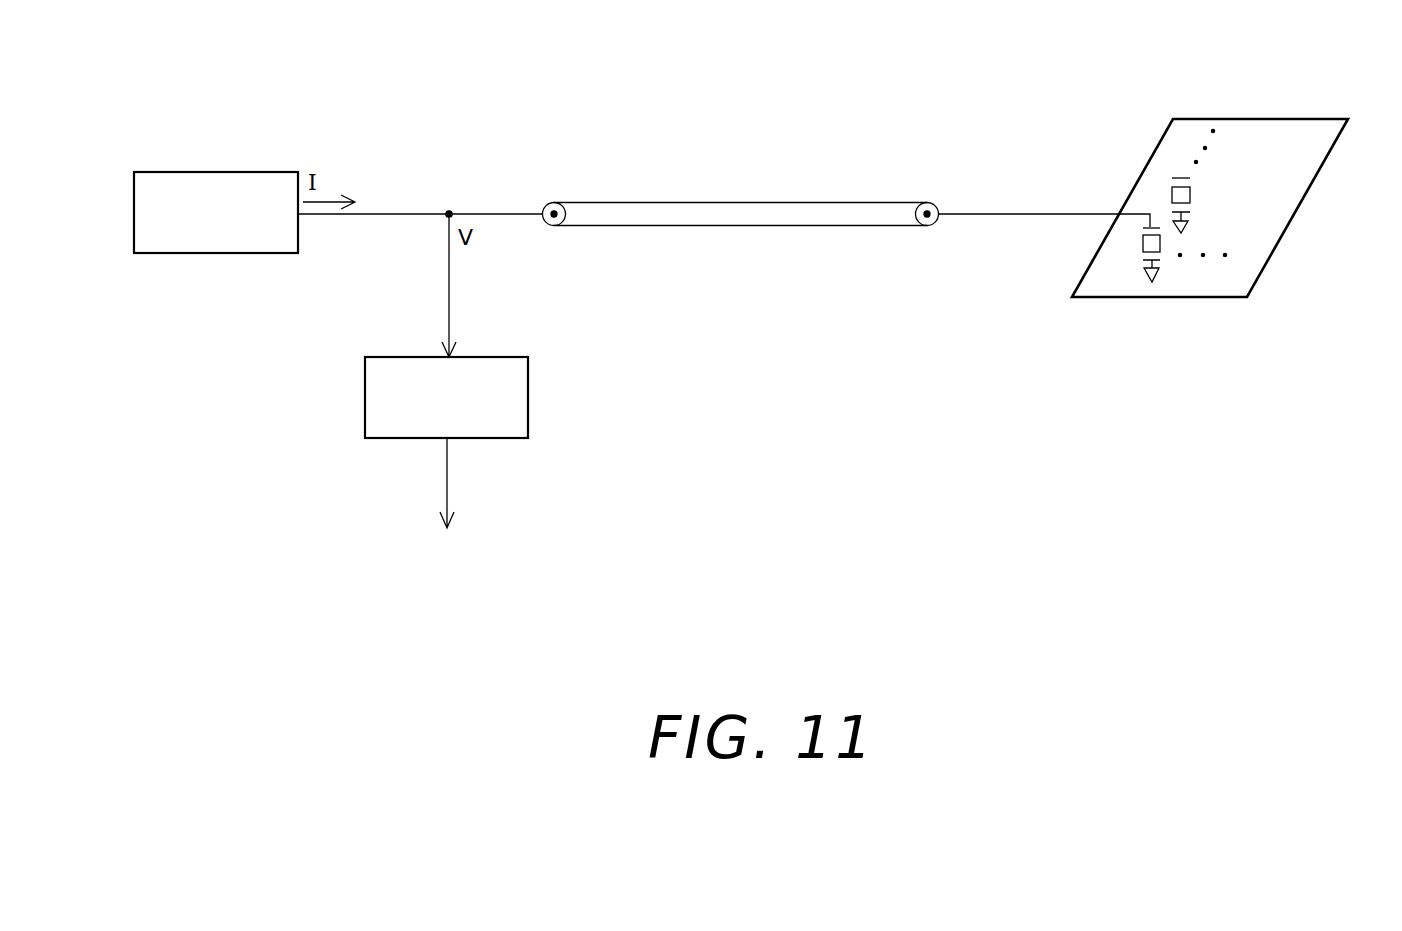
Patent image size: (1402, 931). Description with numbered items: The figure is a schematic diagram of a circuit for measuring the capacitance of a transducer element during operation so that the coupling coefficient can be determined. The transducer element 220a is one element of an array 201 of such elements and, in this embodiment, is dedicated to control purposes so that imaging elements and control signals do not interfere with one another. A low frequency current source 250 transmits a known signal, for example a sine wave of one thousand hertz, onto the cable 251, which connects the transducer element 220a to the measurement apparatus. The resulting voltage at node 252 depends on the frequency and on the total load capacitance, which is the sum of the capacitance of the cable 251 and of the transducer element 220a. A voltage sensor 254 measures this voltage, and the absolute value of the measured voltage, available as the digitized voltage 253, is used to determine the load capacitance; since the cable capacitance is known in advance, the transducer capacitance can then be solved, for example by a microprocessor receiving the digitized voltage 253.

The low frequency current source 250 is at (210, 172).
The node 252 is at (449, 211).
The cable 251 is at (772, 202).
The array 201 is at (1218, 111).
The transducer element 220a is at (1162, 242).
The voltage sensor 254 is at (529, 390).
The digitized voltage 253 is at (448, 476).